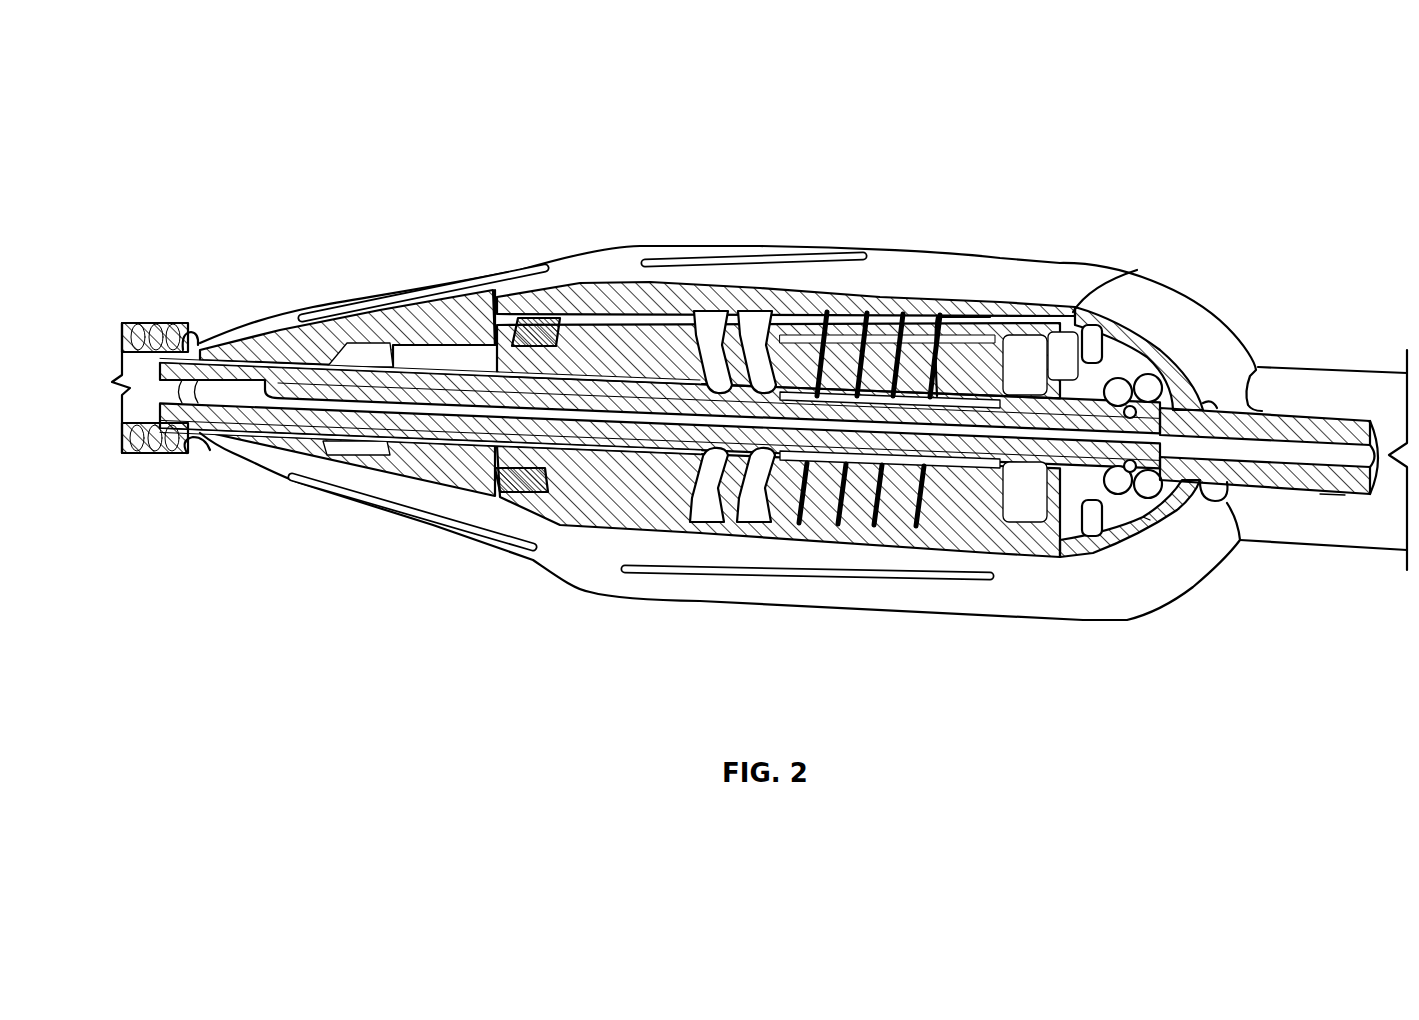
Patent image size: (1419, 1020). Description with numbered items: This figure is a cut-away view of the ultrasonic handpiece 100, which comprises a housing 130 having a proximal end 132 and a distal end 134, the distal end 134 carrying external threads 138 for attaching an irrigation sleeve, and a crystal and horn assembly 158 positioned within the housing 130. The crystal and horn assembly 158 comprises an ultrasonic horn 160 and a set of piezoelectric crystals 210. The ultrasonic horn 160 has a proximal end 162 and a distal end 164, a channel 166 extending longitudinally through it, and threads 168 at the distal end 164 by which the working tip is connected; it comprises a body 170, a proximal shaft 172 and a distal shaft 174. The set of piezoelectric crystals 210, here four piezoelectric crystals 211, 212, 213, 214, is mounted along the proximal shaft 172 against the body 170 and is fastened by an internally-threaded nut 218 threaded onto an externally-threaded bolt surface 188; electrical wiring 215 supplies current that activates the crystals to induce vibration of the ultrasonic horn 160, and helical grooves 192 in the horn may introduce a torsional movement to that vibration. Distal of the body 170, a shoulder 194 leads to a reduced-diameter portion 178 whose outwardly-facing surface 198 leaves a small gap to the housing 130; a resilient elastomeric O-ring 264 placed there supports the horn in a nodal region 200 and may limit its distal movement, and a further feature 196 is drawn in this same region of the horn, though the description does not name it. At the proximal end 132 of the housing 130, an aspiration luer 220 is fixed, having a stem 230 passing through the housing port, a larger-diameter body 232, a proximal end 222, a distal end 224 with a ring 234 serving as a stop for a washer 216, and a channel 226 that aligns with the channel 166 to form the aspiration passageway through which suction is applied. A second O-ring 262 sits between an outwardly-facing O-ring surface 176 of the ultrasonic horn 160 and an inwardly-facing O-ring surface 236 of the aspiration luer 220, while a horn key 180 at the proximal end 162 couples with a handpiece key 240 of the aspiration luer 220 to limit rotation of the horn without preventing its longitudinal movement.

The ultrasonic handpiece 100 is at (679, 174).
The housing 130 is at (805, 218).
The proximal end 132 is at (1250, 318).
The distal end 134 is at (153, 314).
The external threads 138 is at (190, 333).
The crystal and horn assembly 158 is at (912, 548).
The ultrasonic horn 160 is at (606, 477).
The proximal end 162 is at (1195, 345).
The distal end 164 is at (182, 452).
The channel 166 is at (297, 398).
The threads 168 is at (224, 442).
The body 170 is at (657, 345).
The proximal shaft 172 is at (932, 330).
The distal shaft 174 is at (268, 420).
The O-ring surface 176 is at (1130, 415).
The reduced-diameter portion 178 is at (493, 293).
The horn key 180 is at (1045, 500).
The externally-threaded bolt surface 188 is at (975, 413).
The helical grooves 192 is at (662, 472).
The shoulder 194 is at (577, 262).
The lower front slot 196 is at (462, 457).
The outwardly-facing surface 198 is at (510, 492).
The nodal region 200 is at (522, 478).
The set of piezoelectric crystals 210 is at (712, 660).
The piezoelectric crystal 211 is at (907, 535).
The piezoelectric crystal 212 is at (858, 505).
The piezoelectric crystal 213 is at (808, 492).
The piezoelectric crystal 214 is at (748, 500).
The electrical wiring 215 is at (845, 322).
The washer 216 is at (1040, 400).
The internally-threaded nut 218 is at (1030, 360).
The aspiration luer 220 is at (1292, 495).
The proximal end 222 is at (1374, 390).
The distal end 224 is at (1102, 532).
The channel 226 is at (1318, 453).
The stem 230 is at (1330, 482).
The body 232 is at (1148, 518).
The ring 234 is at (1065, 547).
The O-ring surface 236 is at (1113, 420).
The handpiece key 240 is at (1035, 472).
The O-ring 262 is at (1170, 523).
The O-ring 264 is at (510, 290).